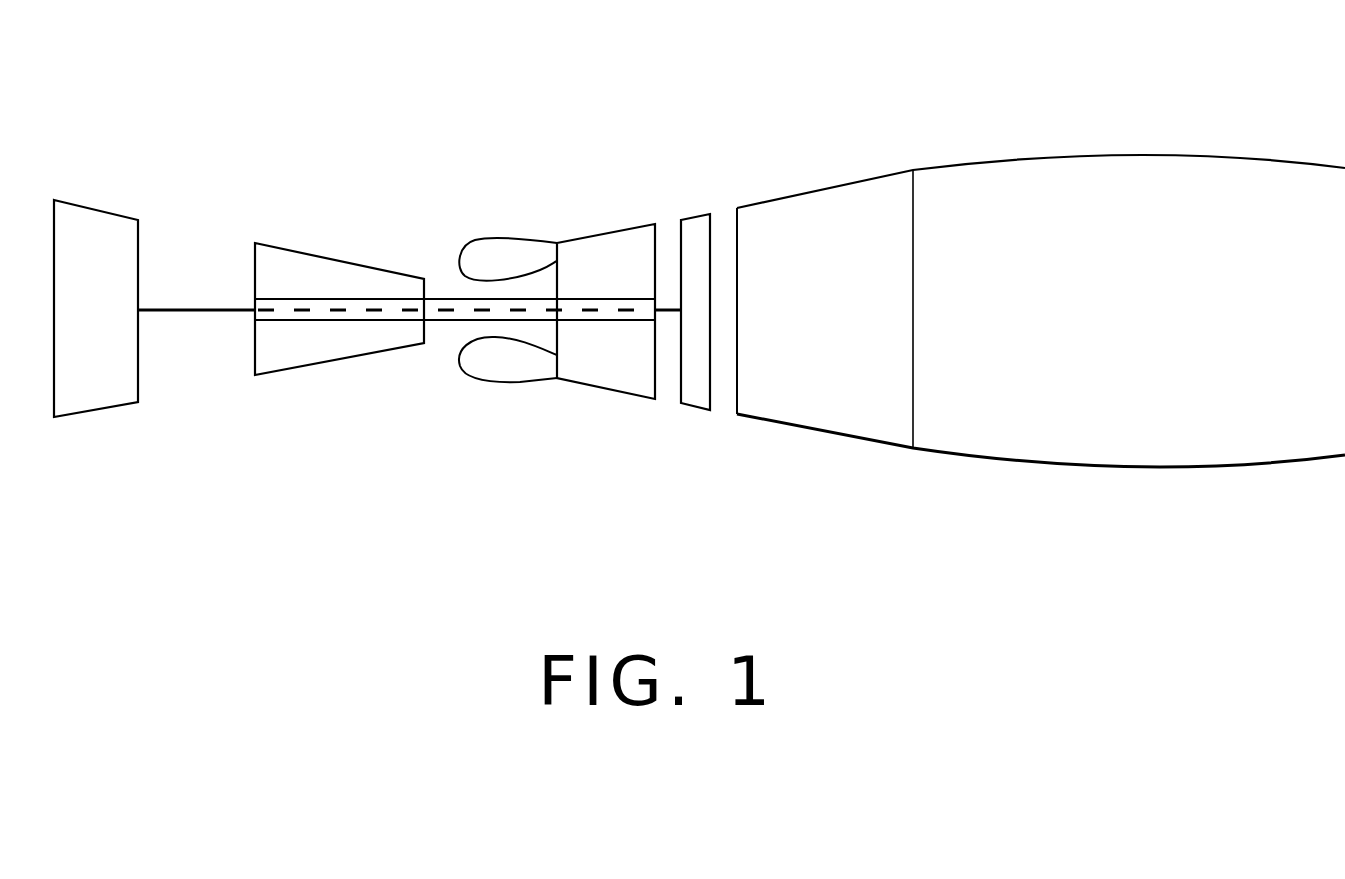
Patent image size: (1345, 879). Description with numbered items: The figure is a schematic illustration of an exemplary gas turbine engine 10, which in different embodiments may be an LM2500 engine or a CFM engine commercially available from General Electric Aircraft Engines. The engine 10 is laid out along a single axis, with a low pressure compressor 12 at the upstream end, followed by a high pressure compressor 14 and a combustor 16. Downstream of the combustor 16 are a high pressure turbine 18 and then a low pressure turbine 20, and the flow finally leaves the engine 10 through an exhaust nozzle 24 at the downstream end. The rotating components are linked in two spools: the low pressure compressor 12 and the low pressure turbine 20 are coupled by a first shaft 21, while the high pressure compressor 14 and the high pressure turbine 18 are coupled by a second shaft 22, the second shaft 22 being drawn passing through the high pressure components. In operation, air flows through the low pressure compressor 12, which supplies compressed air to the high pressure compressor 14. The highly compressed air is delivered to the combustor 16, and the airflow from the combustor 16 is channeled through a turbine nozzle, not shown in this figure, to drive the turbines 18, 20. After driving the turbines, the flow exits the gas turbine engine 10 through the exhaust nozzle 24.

The gas turbine engine 10 is at (935, 105).
The low pressure compressor 12 is at (119, 404).
The high pressure compressor 14 is at (365, 360).
The combustor 16 is at (500, 385).
The high pressure turbine 18 is at (623, 395).
The low pressure turbine 20 is at (693, 405).
The first shaft 21 is at (166, 310).
The second shaft 22 is at (439, 299).
The exhaust nozzle 24 is at (1060, 468).